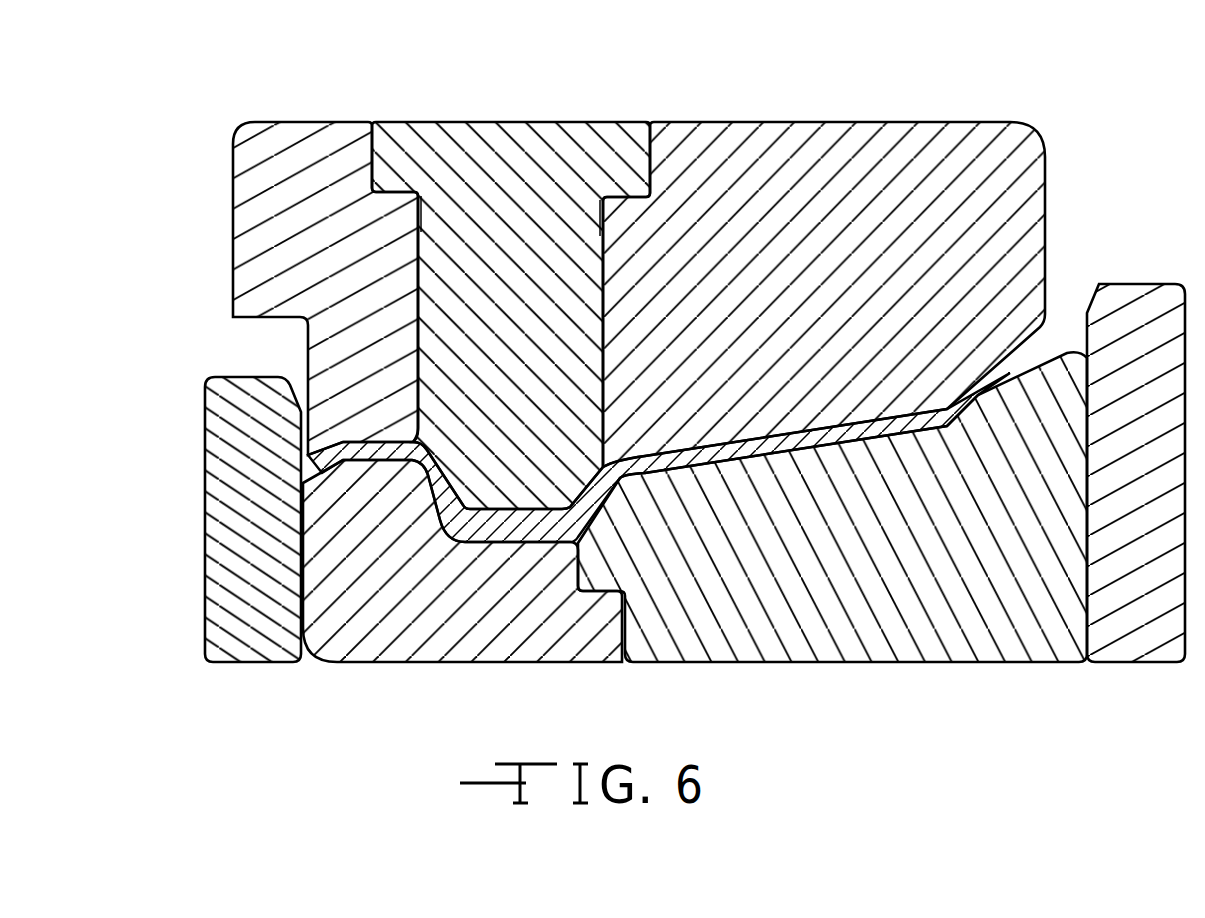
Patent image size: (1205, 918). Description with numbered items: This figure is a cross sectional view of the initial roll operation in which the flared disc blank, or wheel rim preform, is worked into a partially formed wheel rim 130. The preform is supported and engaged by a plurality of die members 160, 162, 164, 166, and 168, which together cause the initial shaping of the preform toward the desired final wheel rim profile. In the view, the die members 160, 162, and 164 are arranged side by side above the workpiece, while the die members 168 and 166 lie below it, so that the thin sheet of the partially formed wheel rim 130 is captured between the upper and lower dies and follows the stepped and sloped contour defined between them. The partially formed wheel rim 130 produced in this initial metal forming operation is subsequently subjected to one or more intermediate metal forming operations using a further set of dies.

The die member 160 is at (328, 120).
The die member 162 is at (578, 120).
The die member 164 is at (913, 118).
The partially formed wheel rim 130 is at (774, 454).
The die member 168 is at (485, 664).
The die member 166 is at (830, 664).